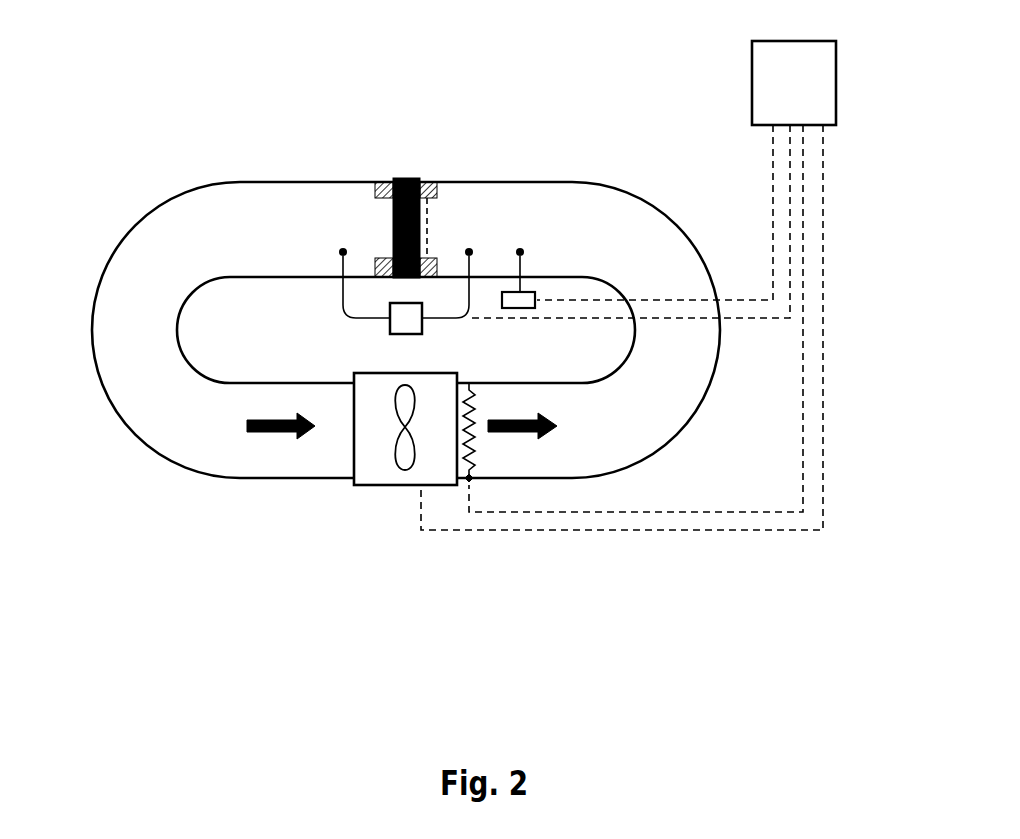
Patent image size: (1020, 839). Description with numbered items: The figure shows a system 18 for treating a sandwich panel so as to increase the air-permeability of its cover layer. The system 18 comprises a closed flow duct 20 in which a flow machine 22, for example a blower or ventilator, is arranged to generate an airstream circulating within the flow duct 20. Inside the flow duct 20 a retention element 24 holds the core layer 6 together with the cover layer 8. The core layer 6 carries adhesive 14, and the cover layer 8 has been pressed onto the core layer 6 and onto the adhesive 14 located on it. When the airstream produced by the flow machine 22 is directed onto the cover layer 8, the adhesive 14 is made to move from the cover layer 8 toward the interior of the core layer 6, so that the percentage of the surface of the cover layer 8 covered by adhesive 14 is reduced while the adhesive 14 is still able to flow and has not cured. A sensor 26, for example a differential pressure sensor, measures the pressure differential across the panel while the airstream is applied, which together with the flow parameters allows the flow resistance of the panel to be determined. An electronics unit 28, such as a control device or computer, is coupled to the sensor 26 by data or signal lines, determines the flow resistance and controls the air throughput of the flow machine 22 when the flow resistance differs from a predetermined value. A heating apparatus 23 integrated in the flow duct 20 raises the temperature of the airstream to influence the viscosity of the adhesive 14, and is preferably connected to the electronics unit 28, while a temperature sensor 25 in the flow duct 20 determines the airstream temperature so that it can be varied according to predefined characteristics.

The system 18 is at (155, 152).
The closed flow duct 20 is at (563, 461).
The core layer 6 is at (394, 180).
The cover layer 8 is at (428, 208).
The adhesive 14 is at (413, 166).
The retention element 24 is at (378, 183).
The temperature sensor 25 is at (527, 300).
The sensor 26 is at (406, 325).
The flow machine 22 is at (398, 486).
The heating apparatus 23 is at (472, 455).
The electronics unit 28 is at (815, 97).